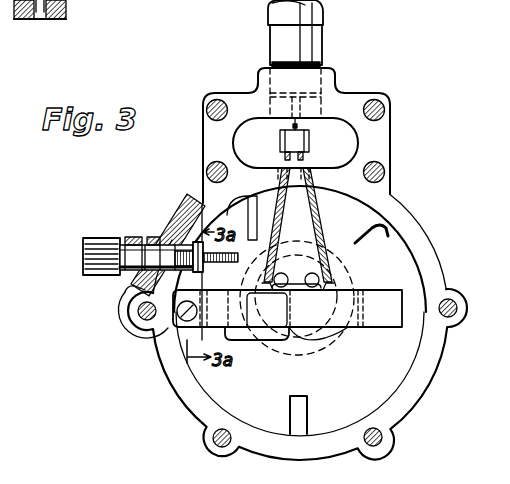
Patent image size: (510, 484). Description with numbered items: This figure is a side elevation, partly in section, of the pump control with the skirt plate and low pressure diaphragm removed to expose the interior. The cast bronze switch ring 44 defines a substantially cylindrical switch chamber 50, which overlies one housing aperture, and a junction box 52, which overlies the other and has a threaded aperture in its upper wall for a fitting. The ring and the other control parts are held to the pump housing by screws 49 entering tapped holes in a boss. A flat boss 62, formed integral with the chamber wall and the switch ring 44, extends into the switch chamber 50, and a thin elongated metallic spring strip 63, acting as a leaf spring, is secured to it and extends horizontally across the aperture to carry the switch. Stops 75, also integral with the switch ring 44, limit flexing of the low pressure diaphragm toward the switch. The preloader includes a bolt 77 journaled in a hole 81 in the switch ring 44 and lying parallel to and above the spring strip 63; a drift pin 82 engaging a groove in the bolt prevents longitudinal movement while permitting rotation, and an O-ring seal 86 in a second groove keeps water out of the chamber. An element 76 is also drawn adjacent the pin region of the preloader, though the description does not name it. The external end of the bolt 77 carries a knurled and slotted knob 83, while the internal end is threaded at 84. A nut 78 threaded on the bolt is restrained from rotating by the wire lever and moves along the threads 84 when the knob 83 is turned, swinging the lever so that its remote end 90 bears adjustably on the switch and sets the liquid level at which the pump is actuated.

The switch ring 44 is at (395, 197).
The screws 49 is at (392, 167).
The switch chamber 50 is at (393, 258).
The junction box 52 is at (345, 132).
The flat boss 62 is at (172, 330).
The spring strip 63 is at (232, 328).
The stops 75 is at (215, 214).
The pin 76 is at (212, 267).
The bolt 77 is at (122, 272).
The nut 78 is at (188, 245).
The hole 81 is at (137, 308).
The drift pin 82 is at (142, 240).
The knurled and slotted knob 83 is at (83, 258).
The threads 84 is at (232, 246).
The O-ring seal 86 is at (132, 295).
The remote end 90 is at (296, 336).